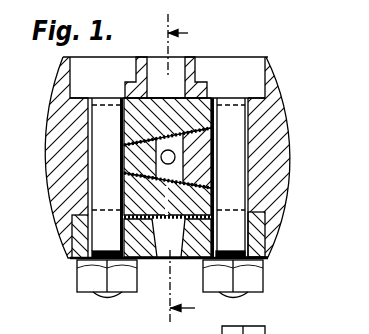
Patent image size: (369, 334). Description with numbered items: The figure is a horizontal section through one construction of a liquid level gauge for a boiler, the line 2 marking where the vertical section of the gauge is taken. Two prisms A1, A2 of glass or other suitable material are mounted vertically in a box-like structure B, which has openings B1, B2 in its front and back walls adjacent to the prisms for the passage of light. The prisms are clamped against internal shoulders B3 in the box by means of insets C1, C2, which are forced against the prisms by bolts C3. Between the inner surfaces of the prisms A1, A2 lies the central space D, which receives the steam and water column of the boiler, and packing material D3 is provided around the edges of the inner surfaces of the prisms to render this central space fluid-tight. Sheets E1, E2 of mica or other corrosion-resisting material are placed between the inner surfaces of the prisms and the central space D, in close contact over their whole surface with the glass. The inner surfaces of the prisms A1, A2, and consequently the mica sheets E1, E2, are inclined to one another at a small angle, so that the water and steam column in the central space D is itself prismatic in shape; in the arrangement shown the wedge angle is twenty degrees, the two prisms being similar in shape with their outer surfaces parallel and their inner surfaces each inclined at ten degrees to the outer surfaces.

The section line 2— 2 is at (189, 168).
The prism A1 is at (208, 98).
The prism A2 is at (73, 215).
The box-like structure B is at (57, 157).
The opening B1 is at (186, 56).
The opening B2 is at (162, 253).
The internal shoulders B3 is at (214, 150).
The inset C1 is at (137, 72).
The inset C2 is at (187, 253).
The bolts C3 is at (313, 177).
The central space D is at (120, 160).
The packing material D3 is at (310, 219).
The sheet of mica E1 is at (166, 84).
The sheet of mica E2 is at (184, 167).